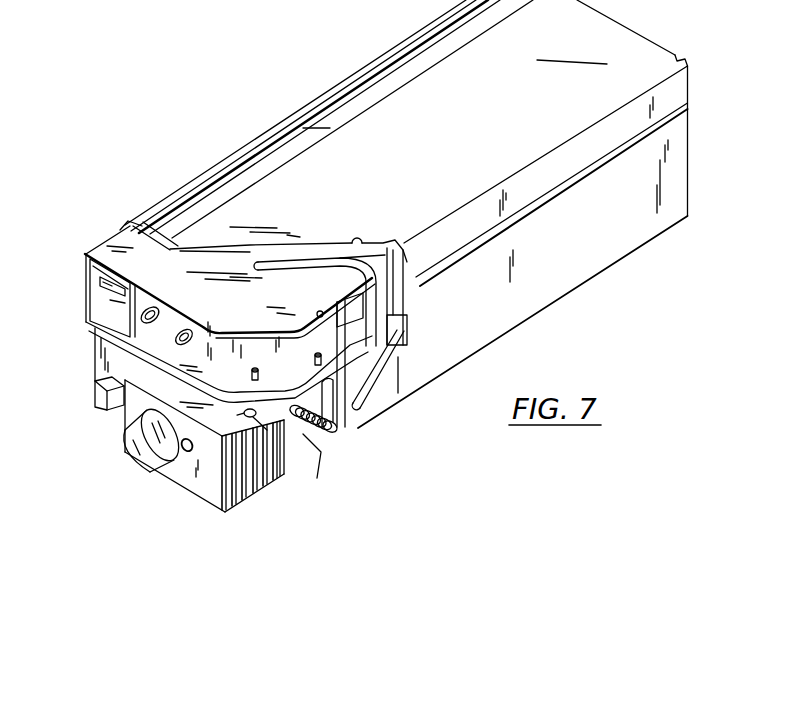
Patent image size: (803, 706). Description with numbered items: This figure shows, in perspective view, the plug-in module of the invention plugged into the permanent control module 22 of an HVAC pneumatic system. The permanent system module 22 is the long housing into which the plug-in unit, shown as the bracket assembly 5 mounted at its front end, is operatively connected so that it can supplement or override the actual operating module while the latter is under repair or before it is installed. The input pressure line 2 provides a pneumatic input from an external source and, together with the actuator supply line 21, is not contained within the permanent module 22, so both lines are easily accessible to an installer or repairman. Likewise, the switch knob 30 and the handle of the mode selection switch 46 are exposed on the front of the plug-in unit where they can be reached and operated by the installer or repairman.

The permanent module 22 is at (286, 116).
The laser module assembly 5 is at (102, 451).
The mode selection switch 46 is at (94, 408).
The switch knob 30 is at (144, 457).
The input pressure line 2 is at (336, 432).
The actuator supply line 21 is at (307, 467).